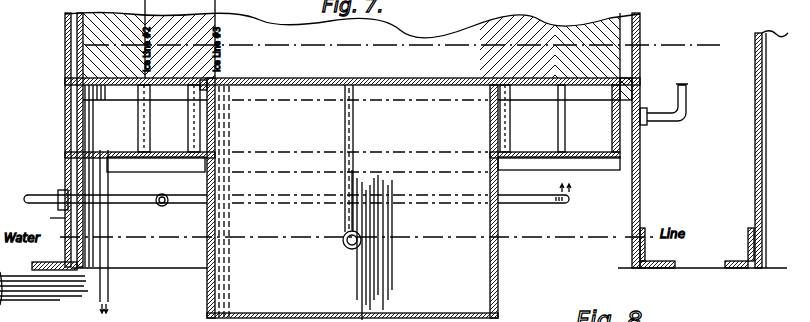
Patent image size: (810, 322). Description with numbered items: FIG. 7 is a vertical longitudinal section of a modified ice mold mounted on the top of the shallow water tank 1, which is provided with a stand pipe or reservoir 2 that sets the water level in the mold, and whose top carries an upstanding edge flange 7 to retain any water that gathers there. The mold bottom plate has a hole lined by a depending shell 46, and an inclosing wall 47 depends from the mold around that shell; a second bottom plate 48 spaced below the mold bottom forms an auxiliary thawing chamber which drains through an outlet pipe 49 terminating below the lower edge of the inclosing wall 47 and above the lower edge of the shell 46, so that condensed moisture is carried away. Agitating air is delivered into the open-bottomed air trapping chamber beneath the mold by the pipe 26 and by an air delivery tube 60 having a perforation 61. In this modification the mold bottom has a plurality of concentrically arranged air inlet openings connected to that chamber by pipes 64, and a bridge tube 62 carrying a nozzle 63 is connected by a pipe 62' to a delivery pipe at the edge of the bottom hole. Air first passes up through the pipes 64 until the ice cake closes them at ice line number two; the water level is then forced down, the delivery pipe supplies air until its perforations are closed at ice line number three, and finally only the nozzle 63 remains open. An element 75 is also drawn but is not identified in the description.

The shallow water tank 1 is at (694, 267).
The stand pipe or reservoir 2 is at (755, 131).
The upstanding edge flange 7 is at (65, 45).
The agitating air pipe 26 is at (40, 195).
The depending shell 46 is at (207, 215).
The inclosing wall 47 is at (651, 197).
The second bottom plate 48 is at (606, 156).
The outlet pipe 49 is at (108, 231).
The air delivery pipe 60 is at (136, 191).
The perforations 61 is at (168, 197).
The bridge tube 62 is at (367, 245).
The connecting pipe 62' is at (364, 158).
The delivery nozzle 63 is at (356, 237).
The air inlet pipes 64 is at (568, 130).
The partition 75 is at (538, 88).